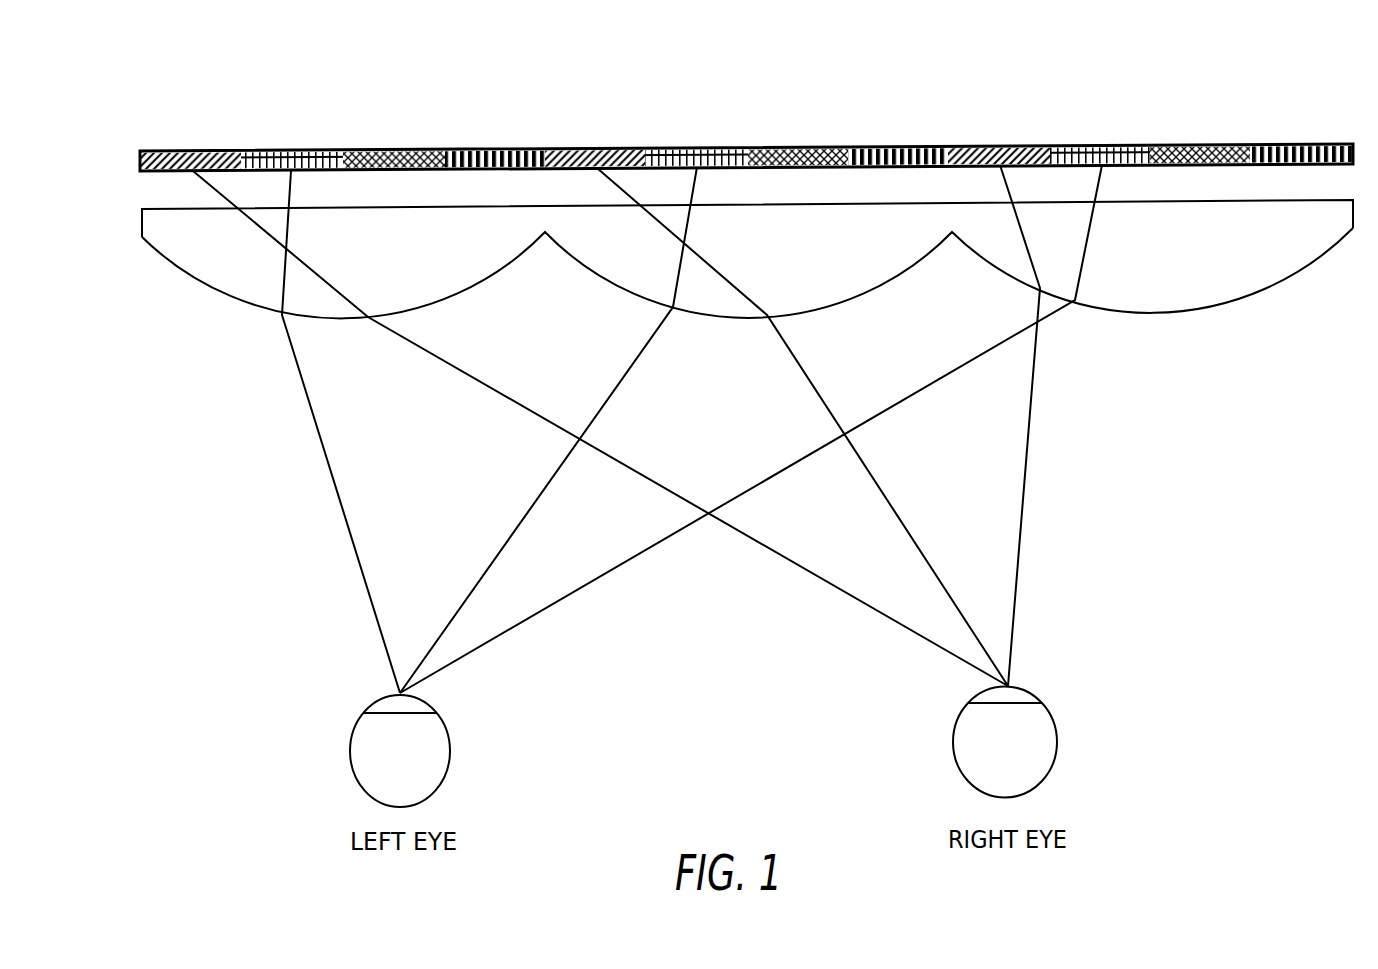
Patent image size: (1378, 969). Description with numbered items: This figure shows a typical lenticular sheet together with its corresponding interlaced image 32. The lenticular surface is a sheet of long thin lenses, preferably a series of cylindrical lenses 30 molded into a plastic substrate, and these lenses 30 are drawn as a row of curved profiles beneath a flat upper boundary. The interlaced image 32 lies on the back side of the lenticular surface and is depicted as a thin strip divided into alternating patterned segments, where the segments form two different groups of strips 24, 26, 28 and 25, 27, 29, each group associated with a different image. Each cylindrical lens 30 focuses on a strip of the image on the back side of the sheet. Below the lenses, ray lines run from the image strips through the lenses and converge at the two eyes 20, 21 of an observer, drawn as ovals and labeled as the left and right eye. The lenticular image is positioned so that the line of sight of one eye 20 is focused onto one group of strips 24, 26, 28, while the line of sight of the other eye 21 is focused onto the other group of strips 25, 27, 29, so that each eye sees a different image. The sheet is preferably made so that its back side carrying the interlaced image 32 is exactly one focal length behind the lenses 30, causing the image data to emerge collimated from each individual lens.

The observer's eye 20 is at (445, 718).
The observer's eye 21 is at (1055, 718).
The image strip 24 is at (167, 147).
The image strip 25 is at (269, 147).
The image strip 26 is at (574, 146).
The image strip 27 is at (674, 145).
The image strip 28 is at (978, 144).
The image strip 29 is at (1078, 142).
The cylindrical lens 30 is at (236, 308).
The interlaced image 32 is at (704, 150).